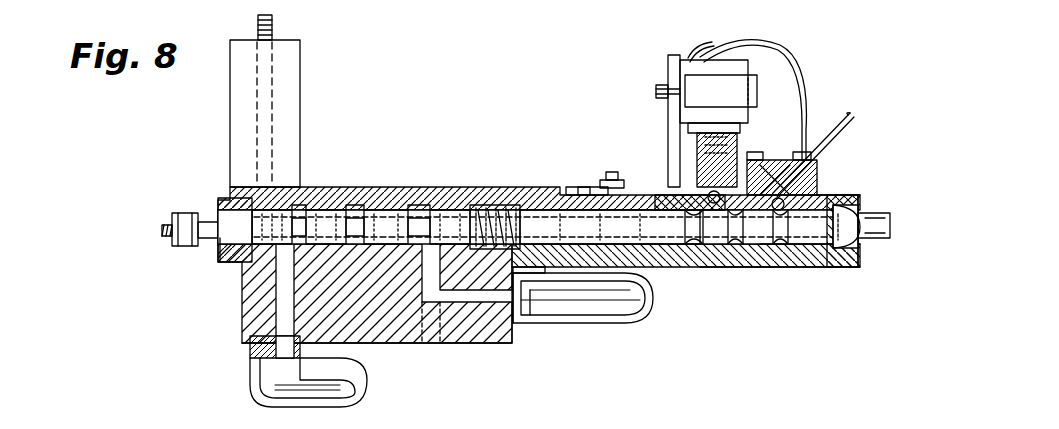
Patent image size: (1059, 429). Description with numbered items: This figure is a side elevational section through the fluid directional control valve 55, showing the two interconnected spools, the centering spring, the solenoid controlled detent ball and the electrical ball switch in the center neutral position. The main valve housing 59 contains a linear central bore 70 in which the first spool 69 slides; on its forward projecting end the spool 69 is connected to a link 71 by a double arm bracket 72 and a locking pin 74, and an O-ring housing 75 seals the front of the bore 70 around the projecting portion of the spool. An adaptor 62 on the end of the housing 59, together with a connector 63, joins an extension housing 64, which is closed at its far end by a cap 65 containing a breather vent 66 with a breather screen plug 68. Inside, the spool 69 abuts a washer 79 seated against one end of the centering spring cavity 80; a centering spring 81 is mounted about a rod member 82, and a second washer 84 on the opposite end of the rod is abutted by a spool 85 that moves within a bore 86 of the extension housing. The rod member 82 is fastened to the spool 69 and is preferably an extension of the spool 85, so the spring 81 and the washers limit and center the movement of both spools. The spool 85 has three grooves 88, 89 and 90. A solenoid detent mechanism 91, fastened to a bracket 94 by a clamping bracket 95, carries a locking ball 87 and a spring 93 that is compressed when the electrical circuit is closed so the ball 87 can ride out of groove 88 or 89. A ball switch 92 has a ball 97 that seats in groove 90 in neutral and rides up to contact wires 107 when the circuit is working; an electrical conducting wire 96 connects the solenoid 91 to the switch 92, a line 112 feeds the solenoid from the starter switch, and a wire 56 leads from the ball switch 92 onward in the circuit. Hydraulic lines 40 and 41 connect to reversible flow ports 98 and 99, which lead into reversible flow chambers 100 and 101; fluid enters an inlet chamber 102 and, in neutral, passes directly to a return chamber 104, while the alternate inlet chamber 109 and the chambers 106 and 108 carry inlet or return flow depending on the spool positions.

The hydraulic line 40 is at (365, 380).
The hydraulic line 41 is at (605, 325).
The fluid directional control valve 55 is at (443, 100).
The wire 56 is at (852, 115).
The main valve housing 59 is at (437, 344).
The adaptor 62 is at (585, 187).
The connector 63 is at (607, 180).
The extension housing 64 is at (815, 268).
The cap 65 is at (875, 205).
The breather vent 66 is at (868, 240).
The breather screen plug 68 is at (892, 228).
The first spool 69 is at (395, 187).
The linear central bore 70 is at (243, 296).
The link 71 is at (162, 231).
The double arm bracket 72 is at (208, 240).
The locking pin 74 is at (184, 213).
The O-ring housing 75 is at (228, 204).
The washer 79 is at (480, 205).
The centering spring cavity 80 is at (545, 205).
The centering spring 81 is at (575, 187).
The rod member 82 is at (470, 343).
The washer 84 is at (524, 230).
The spool 85 is at (662, 267).
The bore 86 is at (845, 272).
The locking ball 87 is at (795, 140).
The groove 88 is at (700, 267).
The groove 89 is at (745, 267).
The groove 90 is at (768, 267).
The solenoid detent mechanism 91 is at (725, 60).
The ball switch 92 is at (815, 183).
The spring 93 is at (727, 187).
The bracket 94 is at (663, 85).
The clamping bracket 95 is at (757, 90).
The electrical conducting wire 96 is at (790, 52).
The ball 97 is at (838, 198).
The reversible flow port 98 is at (252, 360).
The reversible flow port 99 is at (532, 325).
The reversible flow chamber 100 is at (291, 187).
The reversible flow chamber 101 is at (418, 187).
The inlet chamber 102 is at (320, 187).
The return chamber 104 is at (340, 187).
The chamber 106 is at (278, 187).
The wires 107 is at (788, 165).
The chamber 108 is at (478, 205).
The alternate flow or inlet chamber 109 is at (398, 187).
The line 112 is at (712, 42).